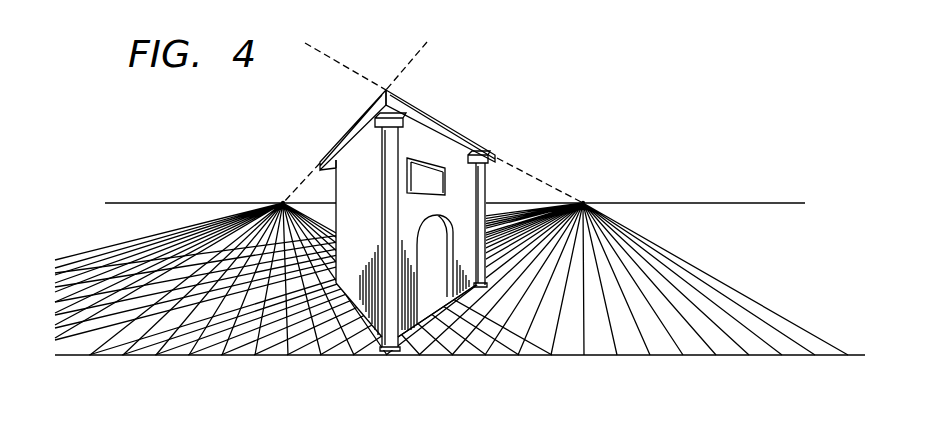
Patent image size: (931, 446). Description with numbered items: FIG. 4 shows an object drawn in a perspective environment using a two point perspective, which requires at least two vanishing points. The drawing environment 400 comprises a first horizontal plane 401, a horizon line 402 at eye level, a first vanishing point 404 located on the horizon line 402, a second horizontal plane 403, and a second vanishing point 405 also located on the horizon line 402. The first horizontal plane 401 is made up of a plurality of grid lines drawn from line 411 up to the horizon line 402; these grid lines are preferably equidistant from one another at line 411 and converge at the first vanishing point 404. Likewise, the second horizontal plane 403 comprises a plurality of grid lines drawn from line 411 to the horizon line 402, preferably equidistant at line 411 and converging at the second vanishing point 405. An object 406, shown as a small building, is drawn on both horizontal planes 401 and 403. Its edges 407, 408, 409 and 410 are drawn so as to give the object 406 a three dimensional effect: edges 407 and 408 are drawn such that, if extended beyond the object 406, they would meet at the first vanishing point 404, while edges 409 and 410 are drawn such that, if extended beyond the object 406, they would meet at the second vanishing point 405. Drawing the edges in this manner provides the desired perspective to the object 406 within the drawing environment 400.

The drawing environment 400 is at (549, 82).
The first horizontal plane 401 is at (732, 263).
The horizon line 402 is at (784, 203).
The second horizontal plane 403 is at (101, 233).
The first vanishing point 404 is at (591, 194).
The second vanishing point 405 is at (275, 194).
The object 406 is at (413, 138).
The edge 407 is at (477, 140).
The edge 408 is at (465, 297).
The edge 409 is at (355, 118).
The edge 410 is at (350, 293).
The line 411 is at (665, 356).